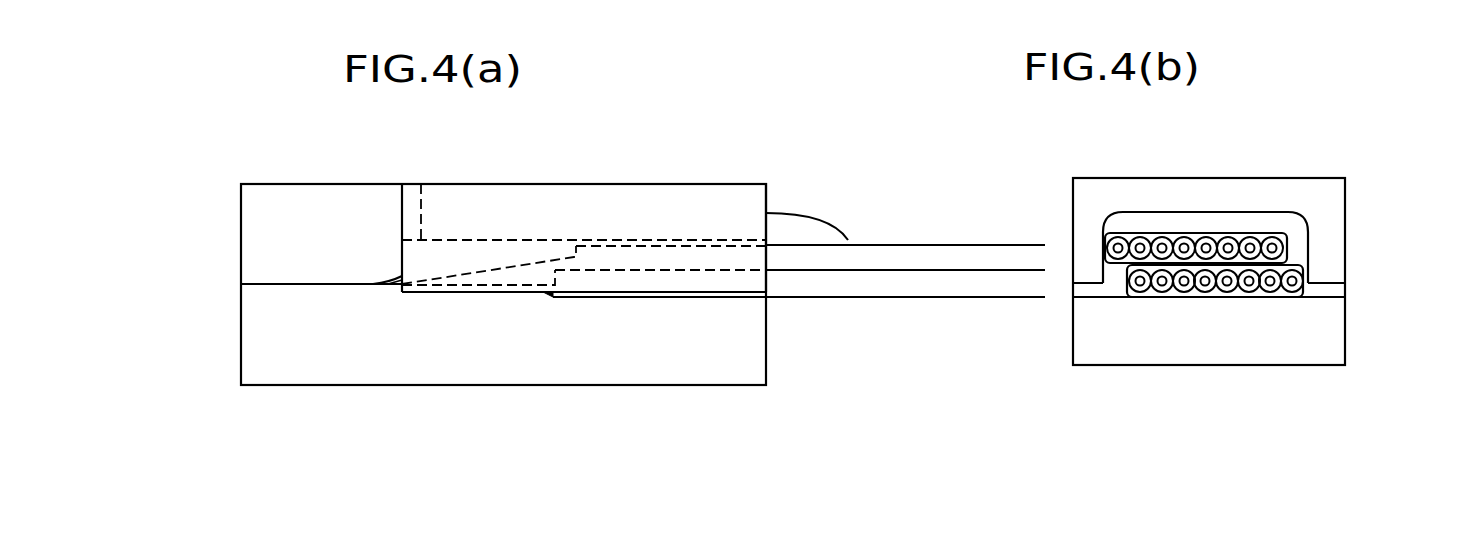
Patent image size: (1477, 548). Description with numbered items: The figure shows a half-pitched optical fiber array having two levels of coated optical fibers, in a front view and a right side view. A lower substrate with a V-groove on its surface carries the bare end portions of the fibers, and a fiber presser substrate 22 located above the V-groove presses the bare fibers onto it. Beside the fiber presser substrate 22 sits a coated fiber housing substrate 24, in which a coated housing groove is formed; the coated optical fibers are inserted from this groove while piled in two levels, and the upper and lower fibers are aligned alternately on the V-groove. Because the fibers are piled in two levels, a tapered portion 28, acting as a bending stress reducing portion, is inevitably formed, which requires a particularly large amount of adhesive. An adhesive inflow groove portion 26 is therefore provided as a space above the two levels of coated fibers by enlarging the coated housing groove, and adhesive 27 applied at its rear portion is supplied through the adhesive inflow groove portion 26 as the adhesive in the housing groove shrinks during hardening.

The fiber presser substrate 22 is at (262, 244).
The coated fiber housing substrate 24 is at (697, 202).
The adhesive inflow groove portion 26 is at (1160, 223).
The adhesive 27 is at (795, 225).
The tapered portion 28 is at (493, 265).